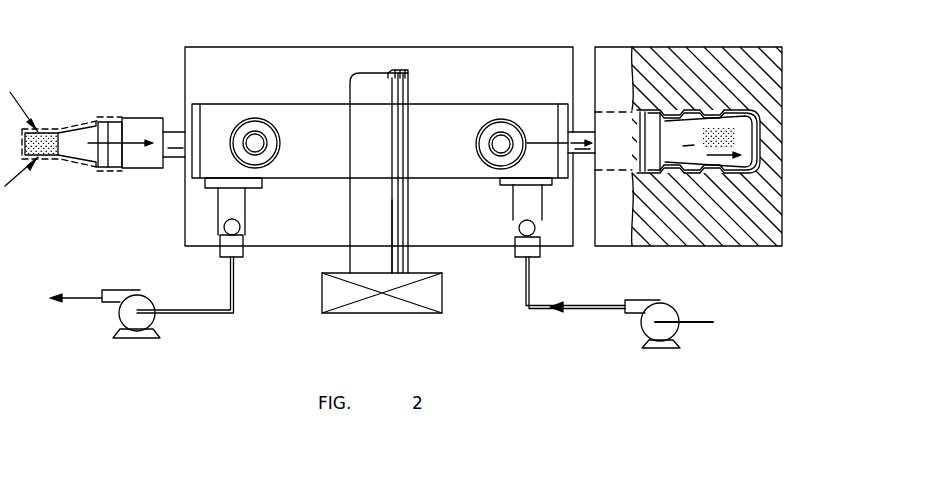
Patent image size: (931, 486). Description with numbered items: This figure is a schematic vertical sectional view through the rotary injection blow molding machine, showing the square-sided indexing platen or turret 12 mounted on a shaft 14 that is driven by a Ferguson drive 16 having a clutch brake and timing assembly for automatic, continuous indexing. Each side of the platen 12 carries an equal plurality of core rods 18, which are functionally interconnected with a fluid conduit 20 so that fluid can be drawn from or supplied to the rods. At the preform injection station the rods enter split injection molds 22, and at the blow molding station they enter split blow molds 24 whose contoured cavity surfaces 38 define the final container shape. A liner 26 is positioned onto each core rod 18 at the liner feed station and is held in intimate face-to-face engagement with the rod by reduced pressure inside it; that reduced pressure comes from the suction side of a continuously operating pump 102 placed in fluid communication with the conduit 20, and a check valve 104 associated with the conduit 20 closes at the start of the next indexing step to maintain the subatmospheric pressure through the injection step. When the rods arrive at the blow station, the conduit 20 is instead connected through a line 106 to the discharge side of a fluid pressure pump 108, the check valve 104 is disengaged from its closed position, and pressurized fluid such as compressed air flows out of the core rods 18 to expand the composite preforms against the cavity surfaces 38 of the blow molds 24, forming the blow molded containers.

The indexing platen 12 is at (459, 103).
The shaft 14 is at (399, 208).
The Ferguson drive 16 is at (352, 312).
The core rods 18 is at (108, 127).
The fluid conduit 20 is at (246, 212).
The split injection molds 22 is at (329, 44).
The split blow molds 24 is at (763, 44).
The liner 26 is at (68, 127).
The cavity surfaces 38 is at (707, 111).
The pump 102 is at (143, 289).
The check valve 104 is at (225, 225).
The line 106 is at (593, 310).
The fluid pressure pump 108 is at (674, 327).